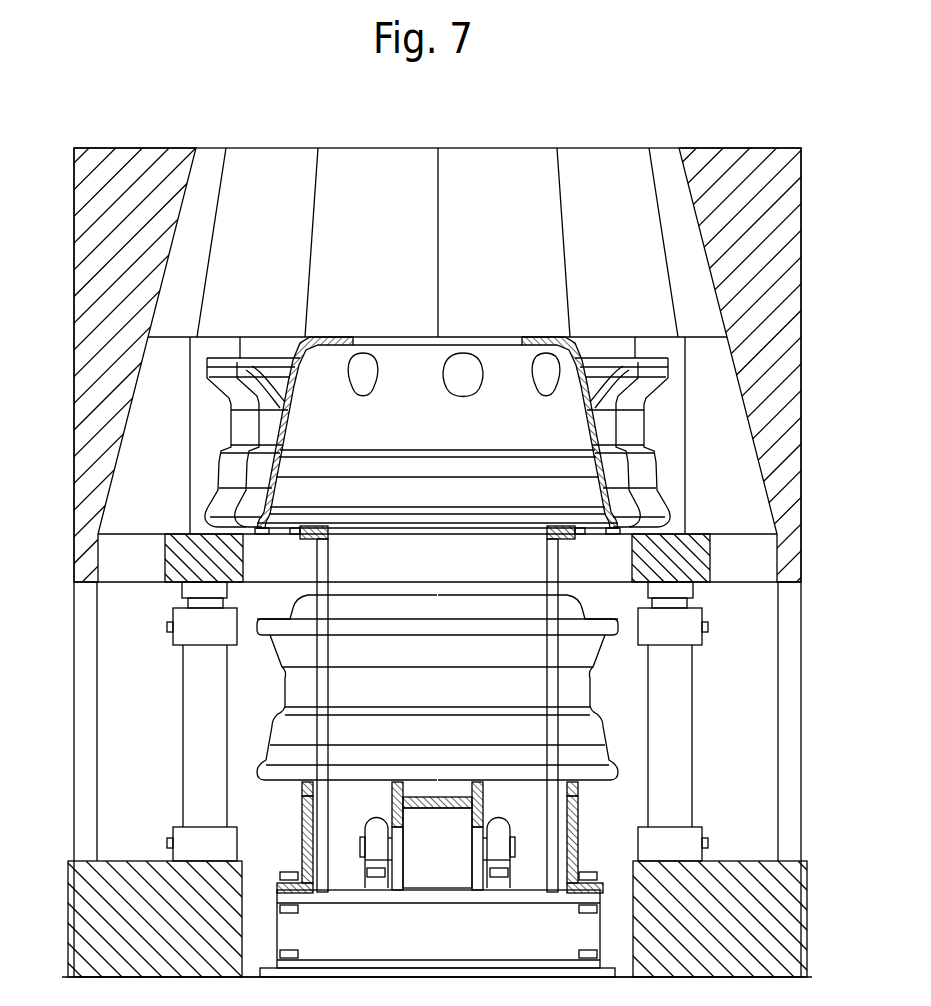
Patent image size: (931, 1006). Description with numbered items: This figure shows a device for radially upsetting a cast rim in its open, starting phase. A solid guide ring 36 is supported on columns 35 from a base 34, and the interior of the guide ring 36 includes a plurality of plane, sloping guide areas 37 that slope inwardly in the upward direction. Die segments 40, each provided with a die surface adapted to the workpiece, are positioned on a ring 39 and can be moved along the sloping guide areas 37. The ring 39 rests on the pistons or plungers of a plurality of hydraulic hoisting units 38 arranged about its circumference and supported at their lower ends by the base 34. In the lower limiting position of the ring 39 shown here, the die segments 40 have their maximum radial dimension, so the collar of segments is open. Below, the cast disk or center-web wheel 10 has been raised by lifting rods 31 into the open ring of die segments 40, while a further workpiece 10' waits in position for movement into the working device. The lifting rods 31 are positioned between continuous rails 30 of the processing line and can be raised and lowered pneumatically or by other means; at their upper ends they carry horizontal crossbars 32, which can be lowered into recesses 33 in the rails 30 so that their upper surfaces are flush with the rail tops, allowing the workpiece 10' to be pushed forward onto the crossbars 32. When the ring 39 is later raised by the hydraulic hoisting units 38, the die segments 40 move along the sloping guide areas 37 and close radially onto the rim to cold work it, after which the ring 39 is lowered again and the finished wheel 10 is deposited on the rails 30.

The disk or center-web wheel 10 is at (437, 435).
The workpiece 10' is at (437, 687).
The rails 30 is at (300, 855).
The lifting rods 31 is at (320, 821).
The crossbars 32 is at (315, 530).
The recesses 33 is at (300, 785).
The base 34 is at (118, 883).
The columns 35 is at (87, 777).
The guide ring 36 is at (145, 160).
The sloping guide areas 37 is at (253, 163).
The hydraulic hoisting units 38 is at (202, 735).
The ring 39 is at (177, 582).
The die segments 40 is at (255, 354).